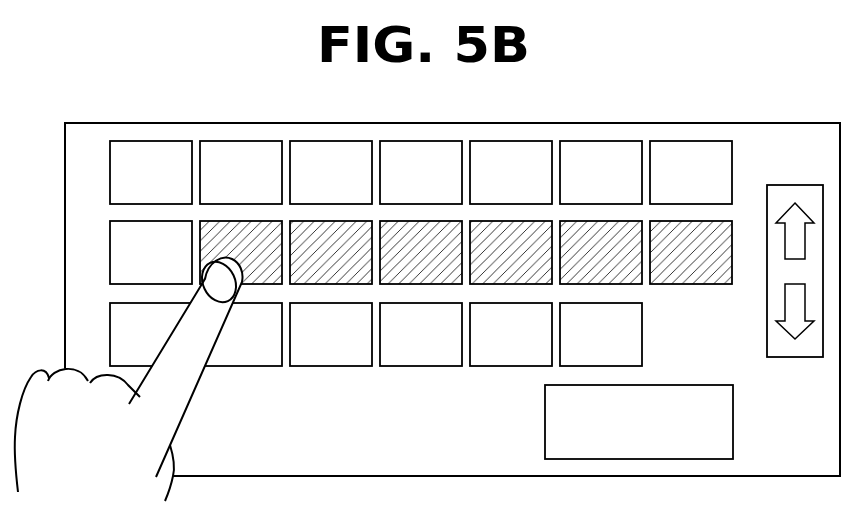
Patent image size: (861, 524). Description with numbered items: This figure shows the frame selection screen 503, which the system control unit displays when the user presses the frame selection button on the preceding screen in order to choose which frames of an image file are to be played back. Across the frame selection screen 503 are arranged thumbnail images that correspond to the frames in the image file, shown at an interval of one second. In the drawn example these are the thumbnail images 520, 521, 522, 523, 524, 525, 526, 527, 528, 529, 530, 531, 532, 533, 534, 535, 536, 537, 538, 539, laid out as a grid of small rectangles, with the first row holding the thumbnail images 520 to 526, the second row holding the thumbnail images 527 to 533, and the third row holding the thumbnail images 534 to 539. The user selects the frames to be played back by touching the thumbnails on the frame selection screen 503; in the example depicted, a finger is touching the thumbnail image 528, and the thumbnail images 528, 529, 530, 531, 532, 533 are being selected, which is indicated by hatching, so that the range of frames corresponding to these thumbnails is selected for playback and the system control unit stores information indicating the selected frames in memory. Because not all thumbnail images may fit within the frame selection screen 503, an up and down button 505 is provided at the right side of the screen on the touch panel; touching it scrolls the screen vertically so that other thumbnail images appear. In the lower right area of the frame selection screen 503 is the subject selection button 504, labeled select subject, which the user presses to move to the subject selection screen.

The frame selection screen 503 is at (655, 124).
The subject selection button 504 is at (545, 424).
The up and down button 505 is at (795, 185).
The thumbnail image 520 is at (151, 172).
The thumbnail image 521 is at (241, 172).
The thumbnail image 522 is at (331, 172).
The thumbnail image 523 is at (421, 172).
The thumbnail image 524 is at (511, 172).
The thumbnail image 525 is at (601, 172).
The thumbnail image 526 is at (691, 172).
The thumbnail image 527 is at (151, 252).
The thumbnail image 528 is at (241, 252).
The thumbnail image 529 is at (331, 252).
The thumbnail image 530 is at (421, 252).
The thumbnail image 531 is at (511, 252).
The thumbnail image 532 is at (601, 252).
The thumbnail image 533 is at (691, 252).
The thumbnail image 534 is at (151, 334).
The thumbnail image 535 is at (241, 334).
The thumbnail image 536 is at (331, 334).
The thumbnail image 537 is at (421, 334).
The thumbnail image 538 is at (511, 334).
The thumbnail image 539 is at (601, 334).